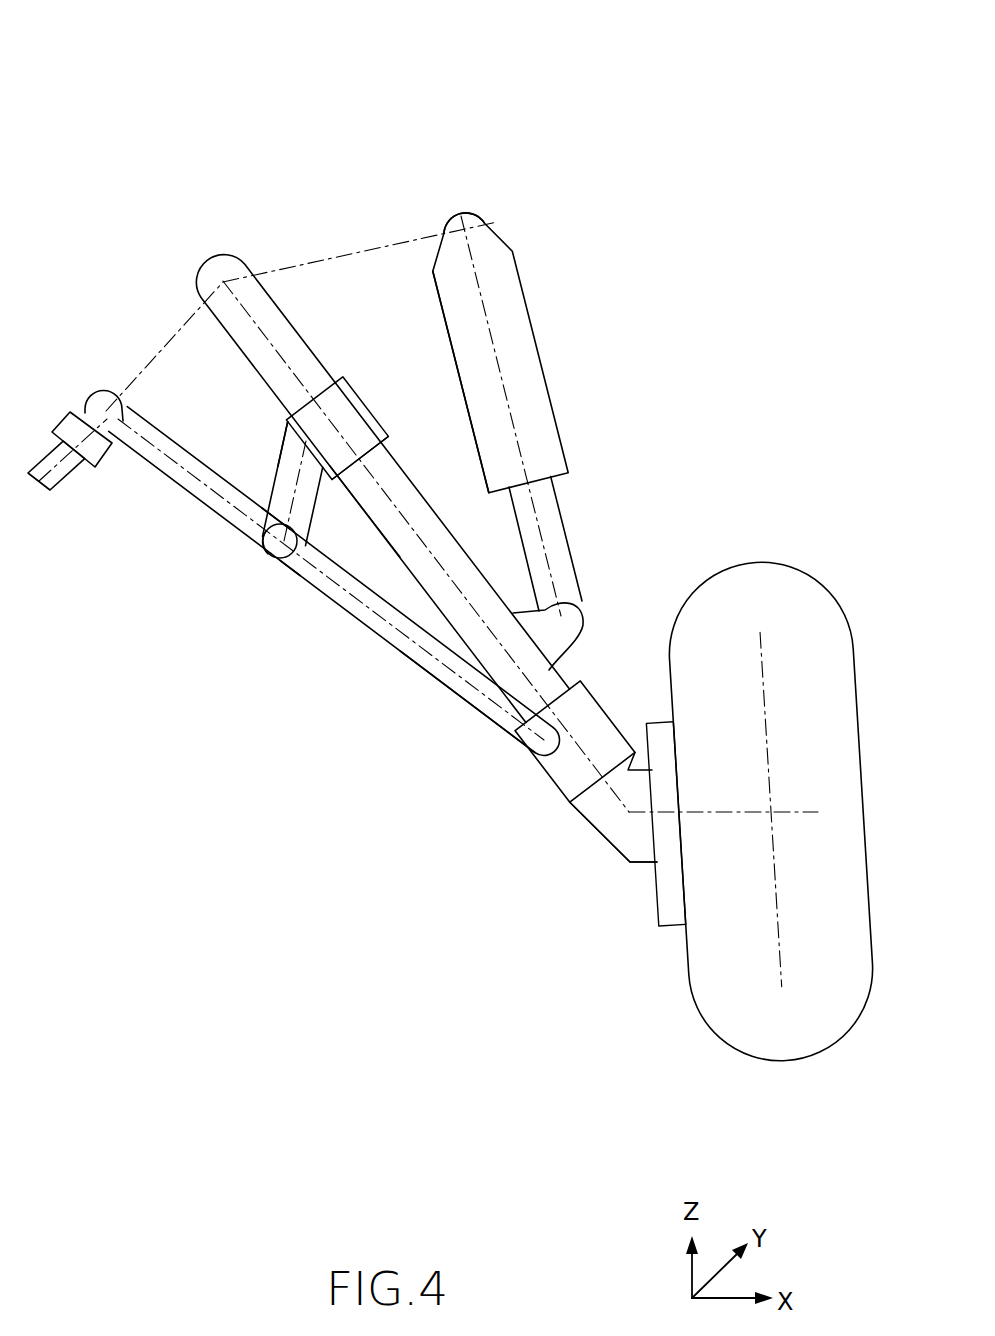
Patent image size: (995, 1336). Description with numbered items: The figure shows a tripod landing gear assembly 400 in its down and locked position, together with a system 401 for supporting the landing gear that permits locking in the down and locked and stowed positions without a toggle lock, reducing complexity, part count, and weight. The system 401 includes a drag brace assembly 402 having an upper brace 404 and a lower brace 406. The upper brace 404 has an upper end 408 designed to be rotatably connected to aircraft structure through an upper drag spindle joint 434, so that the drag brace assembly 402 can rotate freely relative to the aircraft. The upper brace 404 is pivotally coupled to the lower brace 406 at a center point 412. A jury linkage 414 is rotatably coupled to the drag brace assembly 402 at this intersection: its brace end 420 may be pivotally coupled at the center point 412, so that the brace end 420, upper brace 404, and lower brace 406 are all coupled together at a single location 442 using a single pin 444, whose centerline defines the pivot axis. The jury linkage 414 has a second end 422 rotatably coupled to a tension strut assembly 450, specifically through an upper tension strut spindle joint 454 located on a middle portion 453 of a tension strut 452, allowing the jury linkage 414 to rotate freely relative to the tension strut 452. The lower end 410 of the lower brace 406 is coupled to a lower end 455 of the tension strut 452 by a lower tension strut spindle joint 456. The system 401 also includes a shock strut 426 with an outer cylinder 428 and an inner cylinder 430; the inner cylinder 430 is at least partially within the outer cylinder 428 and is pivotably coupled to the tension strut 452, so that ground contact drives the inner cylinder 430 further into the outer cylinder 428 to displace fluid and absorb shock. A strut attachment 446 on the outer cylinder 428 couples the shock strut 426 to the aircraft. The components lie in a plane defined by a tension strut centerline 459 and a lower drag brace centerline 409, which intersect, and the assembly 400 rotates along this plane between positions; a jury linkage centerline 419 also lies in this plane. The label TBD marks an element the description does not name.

The tripod landing gear assembly 400 is at (135, 55).
The system 401 is at (168, 221).
The drag brace assembly 402 is at (166, 520).
The upper brace 404 is at (185, 458).
The lower brace 406 is at (343, 595).
The upper end 408 is at (80, 415).
The lower drag brace centerline 409 is at (472, 692).
The lower end 410 is at (543, 733).
The center point 412 is at (268, 557).
The jury linkage 414 is at (246, 434).
The jury linkage centerline 419 is at (302, 498).
The brace end 420 is at (277, 515).
The second end 422 is at (302, 460).
The shock strut 426 is at (562, 325).
The outer cylinder 428 is at (532, 409).
The inner cylinder 430 is at (563, 578).
The upper drag spindle joint 434 is at (52, 452).
The single location 442 is at (263, 547).
The single pin 444 is at (290, 567).
The strut attachment 446 is at (463, 217).
The tension strut assembly 450 is at (416, 608).
The tension strut 452 is at (308, 373).
The middle portion 453 is at (360, 443).
The upper tension strut spindle joint 454 is at (355, 398).
The lower end 455 is at (595, 790).
The lower tension strut spindle joint 456 is at (588, 717).
The tension strut centerline 459 is at (383, 493).
The damper lower bushing TBD is at (557, 620).